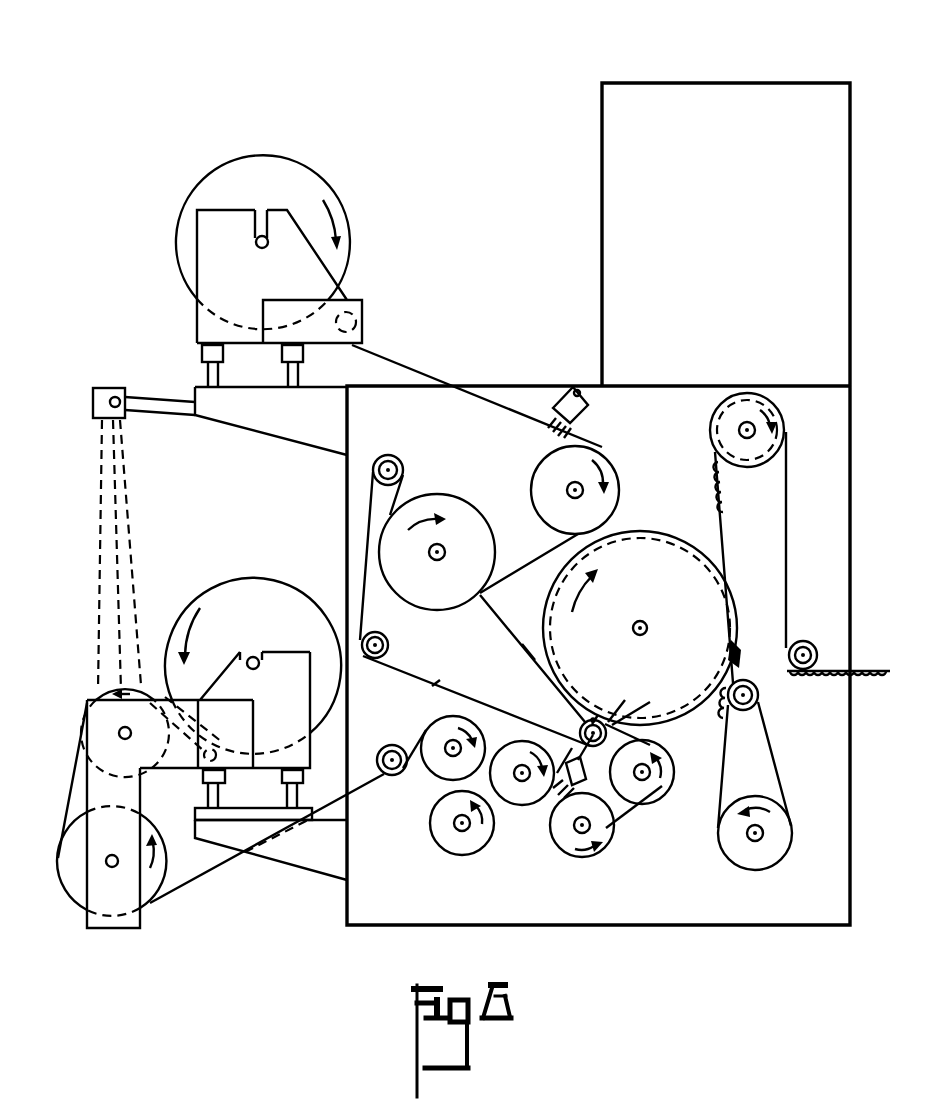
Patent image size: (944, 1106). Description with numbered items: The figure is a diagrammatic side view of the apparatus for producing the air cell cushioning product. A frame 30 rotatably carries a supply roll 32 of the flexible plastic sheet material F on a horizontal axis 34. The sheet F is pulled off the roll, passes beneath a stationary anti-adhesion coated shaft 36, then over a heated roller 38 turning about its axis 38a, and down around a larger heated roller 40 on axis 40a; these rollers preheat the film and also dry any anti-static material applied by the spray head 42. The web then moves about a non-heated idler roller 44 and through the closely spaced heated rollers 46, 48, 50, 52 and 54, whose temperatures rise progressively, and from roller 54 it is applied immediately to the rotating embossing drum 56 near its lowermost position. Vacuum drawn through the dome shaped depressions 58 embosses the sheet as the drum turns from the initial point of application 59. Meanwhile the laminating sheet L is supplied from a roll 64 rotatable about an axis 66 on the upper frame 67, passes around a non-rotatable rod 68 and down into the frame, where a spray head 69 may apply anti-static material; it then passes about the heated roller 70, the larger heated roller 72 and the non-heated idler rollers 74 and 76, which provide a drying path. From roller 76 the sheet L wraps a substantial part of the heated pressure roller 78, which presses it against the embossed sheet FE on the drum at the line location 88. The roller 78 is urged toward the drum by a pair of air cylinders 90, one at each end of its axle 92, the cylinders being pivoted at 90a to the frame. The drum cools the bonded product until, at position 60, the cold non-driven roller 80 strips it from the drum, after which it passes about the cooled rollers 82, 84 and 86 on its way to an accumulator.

The frame 30 is at (347, 484).
The supply roll 32 is at (248, 578).
The axis 34 is at (256, 655).
The shaft 36 is at (222, 745).
The roller 38 is at (97, 699).
The axis 38a is at (127, 727).
The roller 40 is at (72, 882).
The axis 40a is at (110, 868).
The spray head 42 is at (108, 388).
The idler roller 44 is at (388, 746).
The roller 46 is at (450, 717).
The roller 48 is at (468, 852).
The roller 50 is at (521, 805).
The roller 52 is at (583, 857).
The roller 54 is at (660, 786).
The embossing drum 56 is at (650, 562).
The depression 58 is at (618, 537).
The initial point of application 59 is at (634, 698).
The position 60 is at (736, 650).
The roll 64 is at (253, 155).
The axis 66 is at (264, 234).
The upper frame 67 is at (207, 283).
The rod 68 is at (357, 330).
The spray head 69 is at (562, 386).
The roller 70 is at (590, 453).
The roller 72 is at (458, 515).
The idler roller 74 is at (398, 457).
The idler roller 76 is at (390, 648).
The pressure roller 78 is at (580, 730).
The roller 80 is at (748, 672).
The roller 82 is at (775, 846).
The roller 84 is at (776, 433).
The roller 86 is at (810, 648).
The line location 88 is at (598, 715).
The air cylinder 90 is at (610, 827).
The pivot 90a is at (557, 773).
The axle 92 is at (583, 719).
The sheet material F is at (70, 802).
The embossed sheet FE is at (512, 637).
The laminating sheet L is at (432, 686).